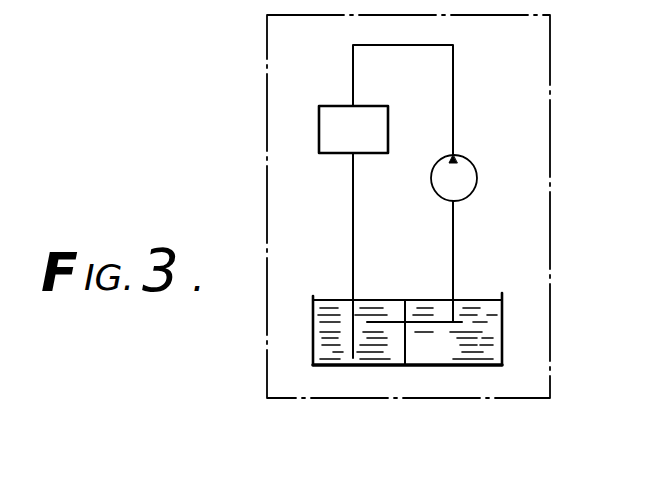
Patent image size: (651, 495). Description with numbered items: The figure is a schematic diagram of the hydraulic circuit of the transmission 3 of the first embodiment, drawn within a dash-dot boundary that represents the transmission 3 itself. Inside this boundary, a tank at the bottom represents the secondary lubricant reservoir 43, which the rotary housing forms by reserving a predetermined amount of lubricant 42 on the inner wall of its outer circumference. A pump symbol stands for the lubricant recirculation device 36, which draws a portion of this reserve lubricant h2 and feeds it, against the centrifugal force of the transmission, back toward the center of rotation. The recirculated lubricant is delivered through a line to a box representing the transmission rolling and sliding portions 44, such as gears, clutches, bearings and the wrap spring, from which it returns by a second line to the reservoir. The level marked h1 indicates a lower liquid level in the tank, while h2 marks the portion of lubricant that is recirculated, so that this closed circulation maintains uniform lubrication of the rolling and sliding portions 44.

The transmission 3 is at (267, 120).
The lubricant recirculation device 36 is at (473, 168).
The lubricant 42 is at (498, 297).
The secondary lubricant reservoir 43 is at (314, 298).
The transmission rolling and sliding portions 44 is at (323, 155).
The lower liquid level height h1 is at (407, 341).
The reserve lubricant portion h2 is at (405, 308).